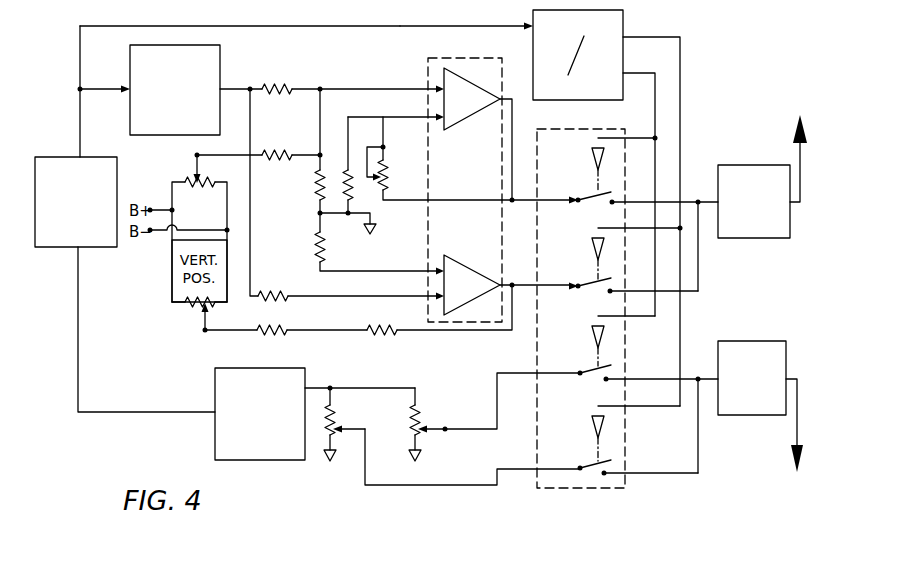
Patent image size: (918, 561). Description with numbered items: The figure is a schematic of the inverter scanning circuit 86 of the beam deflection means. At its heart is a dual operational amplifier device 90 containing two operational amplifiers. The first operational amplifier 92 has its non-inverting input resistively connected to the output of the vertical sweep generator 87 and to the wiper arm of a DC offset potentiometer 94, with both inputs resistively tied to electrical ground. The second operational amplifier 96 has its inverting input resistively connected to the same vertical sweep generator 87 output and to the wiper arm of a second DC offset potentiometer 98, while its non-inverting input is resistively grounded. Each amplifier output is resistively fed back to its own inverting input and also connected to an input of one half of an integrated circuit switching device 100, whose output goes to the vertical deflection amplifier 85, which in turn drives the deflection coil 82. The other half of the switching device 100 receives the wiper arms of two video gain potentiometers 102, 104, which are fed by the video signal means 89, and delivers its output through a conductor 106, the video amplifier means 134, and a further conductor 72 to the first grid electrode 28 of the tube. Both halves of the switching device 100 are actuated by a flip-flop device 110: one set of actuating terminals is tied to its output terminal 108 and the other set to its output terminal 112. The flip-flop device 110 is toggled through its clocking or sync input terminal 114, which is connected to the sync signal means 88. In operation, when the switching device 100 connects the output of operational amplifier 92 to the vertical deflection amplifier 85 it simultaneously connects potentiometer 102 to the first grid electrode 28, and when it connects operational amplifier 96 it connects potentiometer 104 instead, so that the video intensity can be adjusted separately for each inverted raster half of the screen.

The inverter scanning circuit 86 is at (348, 22).
The clocking or sync input terminal 114 is at (507, 24).
The vertical sweep generator 87 is at (220, 62).
The sync signal means 88 is at (100, 248).
The video signal means 89 is at (305, 369).
The dual operational amplifier device 90 is at (491, 58).
The operational amplifier 92 is at (464, 84).
The DC offset potentiometer 94 is at (188, 173).
The operational amplifier 96 is at (466, 270).
The DC offset potentiometer 98 is at (198, 319).
The integrated circuit switching device 100 is at (613, 491).
The video gain potentiometer 102 is at (418, 404).
The video gain potentiometer 104 is at (335, 404).
The conductor 106 is at (699, 446).
The output terminal 108 is at (655, 111).
The flip-flop device 110 is at (621, 11).
The output terminal 112 is at (681, 86).
The video amplifier means 134 is at (769, 341).
The conductor 72 is at (793, 378).
The vertical deflection amplifier 85 is at (740, 165).
The deflection coil 82 is at (783, 132).
The first grid electrode 28 is at (797, 507).